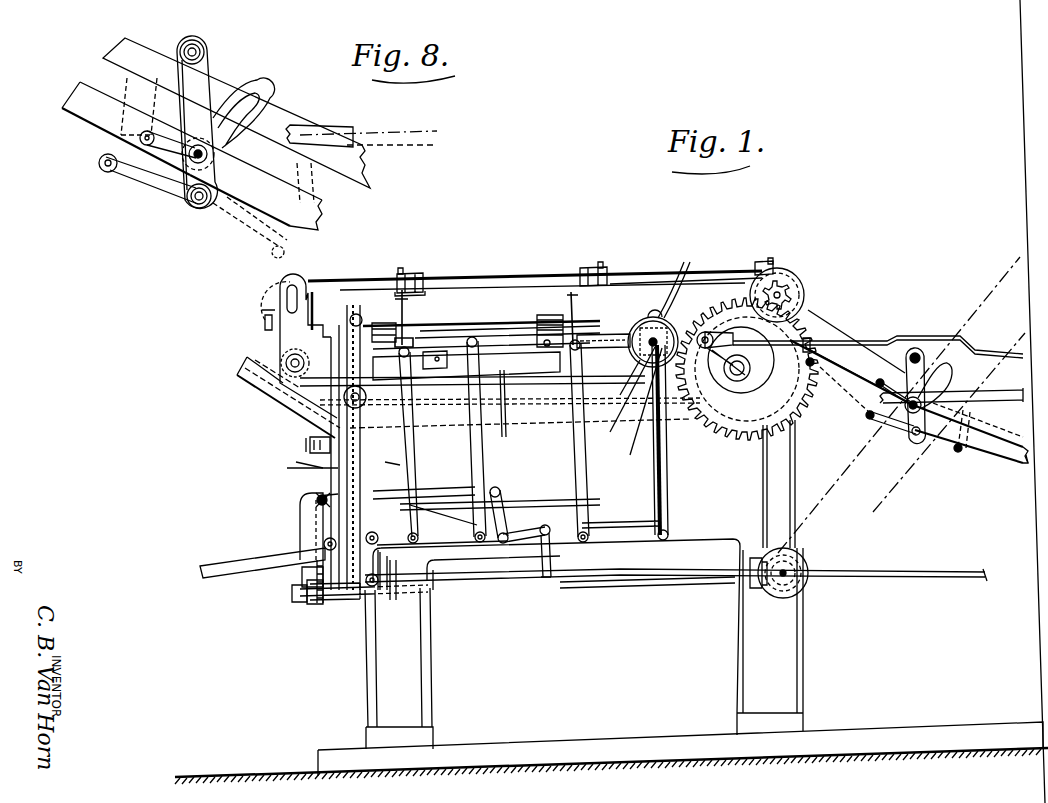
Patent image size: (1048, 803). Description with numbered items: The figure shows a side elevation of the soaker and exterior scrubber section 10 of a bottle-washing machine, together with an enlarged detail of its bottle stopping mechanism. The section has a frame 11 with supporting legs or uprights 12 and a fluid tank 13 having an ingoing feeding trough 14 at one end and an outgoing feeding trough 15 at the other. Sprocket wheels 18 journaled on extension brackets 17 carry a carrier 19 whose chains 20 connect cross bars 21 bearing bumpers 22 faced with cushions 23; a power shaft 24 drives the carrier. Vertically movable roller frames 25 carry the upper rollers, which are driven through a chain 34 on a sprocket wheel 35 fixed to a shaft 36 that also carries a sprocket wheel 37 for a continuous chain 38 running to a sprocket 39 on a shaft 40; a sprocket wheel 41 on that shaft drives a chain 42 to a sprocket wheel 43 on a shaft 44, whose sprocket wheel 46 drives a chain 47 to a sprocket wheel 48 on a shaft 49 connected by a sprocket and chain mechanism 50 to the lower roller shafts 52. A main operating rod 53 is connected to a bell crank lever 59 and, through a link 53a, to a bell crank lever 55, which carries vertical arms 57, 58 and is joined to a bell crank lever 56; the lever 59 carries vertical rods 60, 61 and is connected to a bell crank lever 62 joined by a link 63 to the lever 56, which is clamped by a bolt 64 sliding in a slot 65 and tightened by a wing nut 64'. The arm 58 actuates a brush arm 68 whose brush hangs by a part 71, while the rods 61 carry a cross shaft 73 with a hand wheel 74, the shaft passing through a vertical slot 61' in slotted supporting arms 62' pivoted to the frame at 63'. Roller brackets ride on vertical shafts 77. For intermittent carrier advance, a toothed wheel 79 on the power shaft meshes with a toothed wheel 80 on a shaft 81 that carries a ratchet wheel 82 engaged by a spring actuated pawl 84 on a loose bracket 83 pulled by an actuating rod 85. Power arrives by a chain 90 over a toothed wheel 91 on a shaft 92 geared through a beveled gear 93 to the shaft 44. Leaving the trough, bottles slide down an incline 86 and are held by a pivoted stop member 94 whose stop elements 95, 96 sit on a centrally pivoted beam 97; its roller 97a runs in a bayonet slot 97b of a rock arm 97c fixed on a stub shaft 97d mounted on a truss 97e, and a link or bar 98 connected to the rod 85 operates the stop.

In FIG. 1, the soaker and exterior scrubber section 10 is at (535, 257).
In FIG. 1, the frame 11 is at (795, 468).
In FIG. 1, the supporting legs or uprights 12 is at (805, 640).
In FIG. 1, the water or fluid containing tank 13 is at (637, 416).
In FIG. 1, the ingoing feeding trough 14 is at (250, 362).
In FIG. 8, the outgoing feeding trough 15 is at (113, 53).
In FIG. 1, the outgoing feeding trough 15 is at (852, 324).
In FIG. 1, the extension brackets 17 is at (738, 330).
In FIG. 1, the sprocket wheels 18 is at (800, 283).
In FIG. 1, the carrier 19 is at (500, 274).
In FIG. 1, the chains 20 is at (670, 274).
In FIG. 1, the cross bars 21 is at (397, 280).
In FIG. 1, the bumpers 22 is at (580, 278).
In FIG. 1, the cushion 23 is at (770, 260).
In FIG. 1, the power shaft 24 is at (784, 297).
In FIG. 1, the roller frames 25 is at (505, 437).
In FIG. 1, the chain 34 is at (522, 425).
In FIG. 1, the sprocket wheel 35 is at (537, 314).
In FIG. 1, the shaft 36 is at (540, 318).
In FIG. 1, the sprocket wheel 37 is at (350, 290).
In FIG. 1, the continuous chain 38 is at (343, 468).
In FIG. 1, the sprocket 39 is at (378, 590).
In FIG. 1, the shaft 40 is at (298, 577).
In FIG. 1, the sprocket wheel 41 is at (300, 562).
In FIG. 1, the chain 42 is at (290, 594).
In FIG. 1, the sprocket wheel 43 is at (320, 604).
In FIG. 1, the shaft 44 is at (595, 590).
In FIG. 1, the sprocket wheel 46 is at (325, 603).
In FIG. 1, the chain 47 is at (323, 468).
In FIG. 1, the sprocket wheel 48 is at (312, 440).
In FIG. 1, the shaft 49 is at (310, 446).
In FIG. 1, the sprocket and chain mechanism 50 is at (308, 440).
In FIG. 1, the shafts 52 is at (400, 462).
In FIG. 1, the main operating rod 53 is at (972, 582).
In FIG. 1, the link 53a is at (493, 578).
In FIG. 1, the bell crank lever 55 is at (392, 600).
In FIG. 1, the bell crank lever 56 is at (300, 530).
In FIG. 1, the vertical arm 57 is at (422, 445).
In FIG. 1, the vertical arm 58 is at (484, 466).
In FIG. 1, the bell crank lever 59 is at (553, 580).
In FIG. 1, the vertical rod 60 is at (585, 490).
In FIG. 1, the vertical rod 61 is at (638, 442).
In FIG. 1, the vertical slot 61' is at (684, 286).
In FIG. 1, the bell crank lever 62 is at (520, 515).
In FIG. 1, the slotted supporting arms 62' is at (653, 320).
In FIG. 1, the link 63 is at (486, 499).
In FIG. 1, the pivot 63' is at (520, 414).
In FIG. 1, the bolt 64 is at (298, 489).
In FIG. 1, the wing nut 64' is at (430, 399).
In FIG. 1, the slot 65 is at (316, 500).
In FIG. 1, the brush arm 68 is at (440, 348).
In FIG. 1, the part 71 is at (645, 352).
In FIG. 1, the cross shaft 73 is at (650, 348).
In FIG. 1, the hand wheel 74 is at (582, 328).
In FIG. 1, the vertical shafts 77 is at (577, 318).
In FIG. 1, the toothed wheel 79 is at (785, 282).
In FIG. 1, the toothed wheel 80 is at (758, 270).
In FIG. 1, the shaft 81 is at (738, 382).
In FIG. 1, the ratchet wheel 82 is at (718, 390).
In FIG. 1, the bracket 83 is at (640, 410).
In FIG. 1, the spring actuated pawl 84 is at (705, 318).
In FIG. 1, the actuating rod 85 is at (965, 338).
In FIG. 8, the incline 86 is at (100, 80).
In FIG. 1, the incline 86 is at (857, 375).
In FIG. 1, the chain 90 is at (870, 520).
In FIG. 1, the toothed wheel 91 is at (808, 575).
In FIG. 1, the shaft 92 is at (795, 552).
In FIG. 1, the beveled gear 93 is at (770, 590).
In FIG. 8, the pivoted stop member 94 is at (142, 185).
In FIG. 1, the pivoted stop member 94 is at (867, 418).
In FIG. 8, the stop element 95 is at (118, 148).
In FIG. 1, the stop element 95 is at (876, 385).
In FIG. 8, the stop element 96 is at (320, 210).
In FIG. 1, the stop element 96 is at (1000, 428).
In FIG. 8, the centrally pivoted beam 97 is at (205, 82).
In FIG. 1, the centrally pivoted beam 97 is at (920, 355).
In FIG. 8, the roller 97a is at (170, 205).
In FIG. 8, the slot 97b is at (266, 84).
In FIG. 8, the rock arm 97c is at (266, 96).
In FIG. 8, the stub shaft 97d is at (198, 212).
In FIG. 8, the truss or girt 97e is at (75, 122).
In FIG. 1, the truss or girt 97e is at (1010, 465).
In FIG. 8, the link or bar 98 is at (332, 126).
In FIG. 1, the link or bar 98 is at (990, 392).